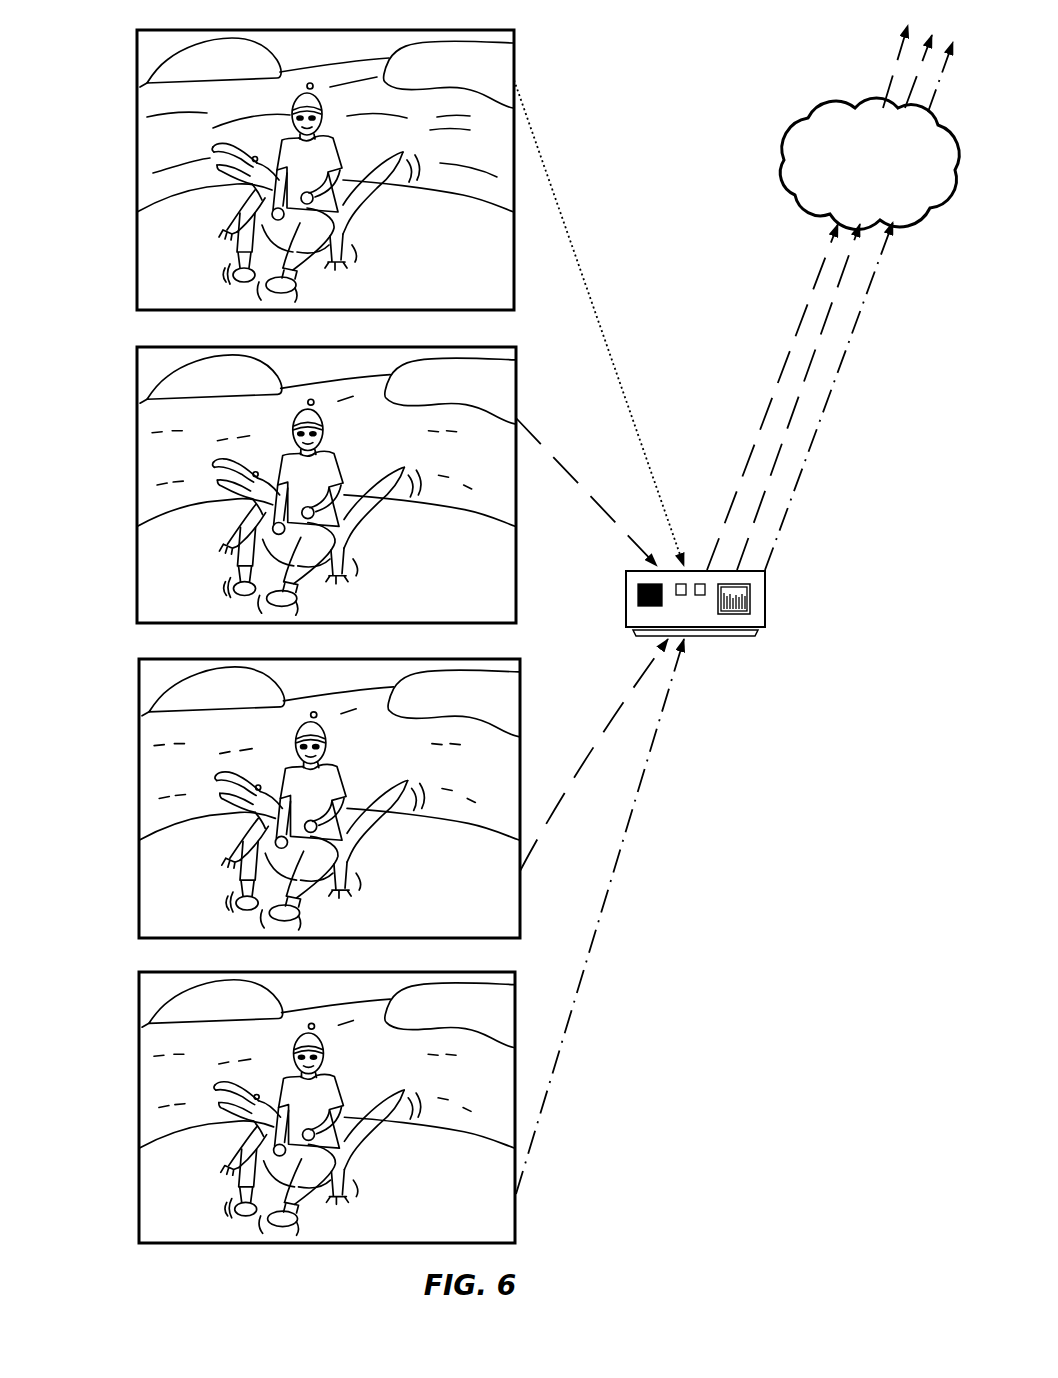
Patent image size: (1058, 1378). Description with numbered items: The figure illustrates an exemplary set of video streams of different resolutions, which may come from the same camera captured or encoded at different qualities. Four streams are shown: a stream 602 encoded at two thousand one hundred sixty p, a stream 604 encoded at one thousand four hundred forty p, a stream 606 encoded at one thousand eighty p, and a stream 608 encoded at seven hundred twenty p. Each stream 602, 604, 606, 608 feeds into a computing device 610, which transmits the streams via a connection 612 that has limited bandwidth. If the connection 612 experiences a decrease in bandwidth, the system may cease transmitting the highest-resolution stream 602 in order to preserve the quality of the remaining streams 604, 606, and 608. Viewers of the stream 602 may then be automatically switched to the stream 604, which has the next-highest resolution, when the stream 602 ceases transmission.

The stream 602 is at (115, 184).
The stream 604 is at (117, 478).
The stream 606 is at (117, 798).
The stream 608 is at (117, 1135).
The computing device 610 is at (735, 654).
The connection 612 is at (869, 163).